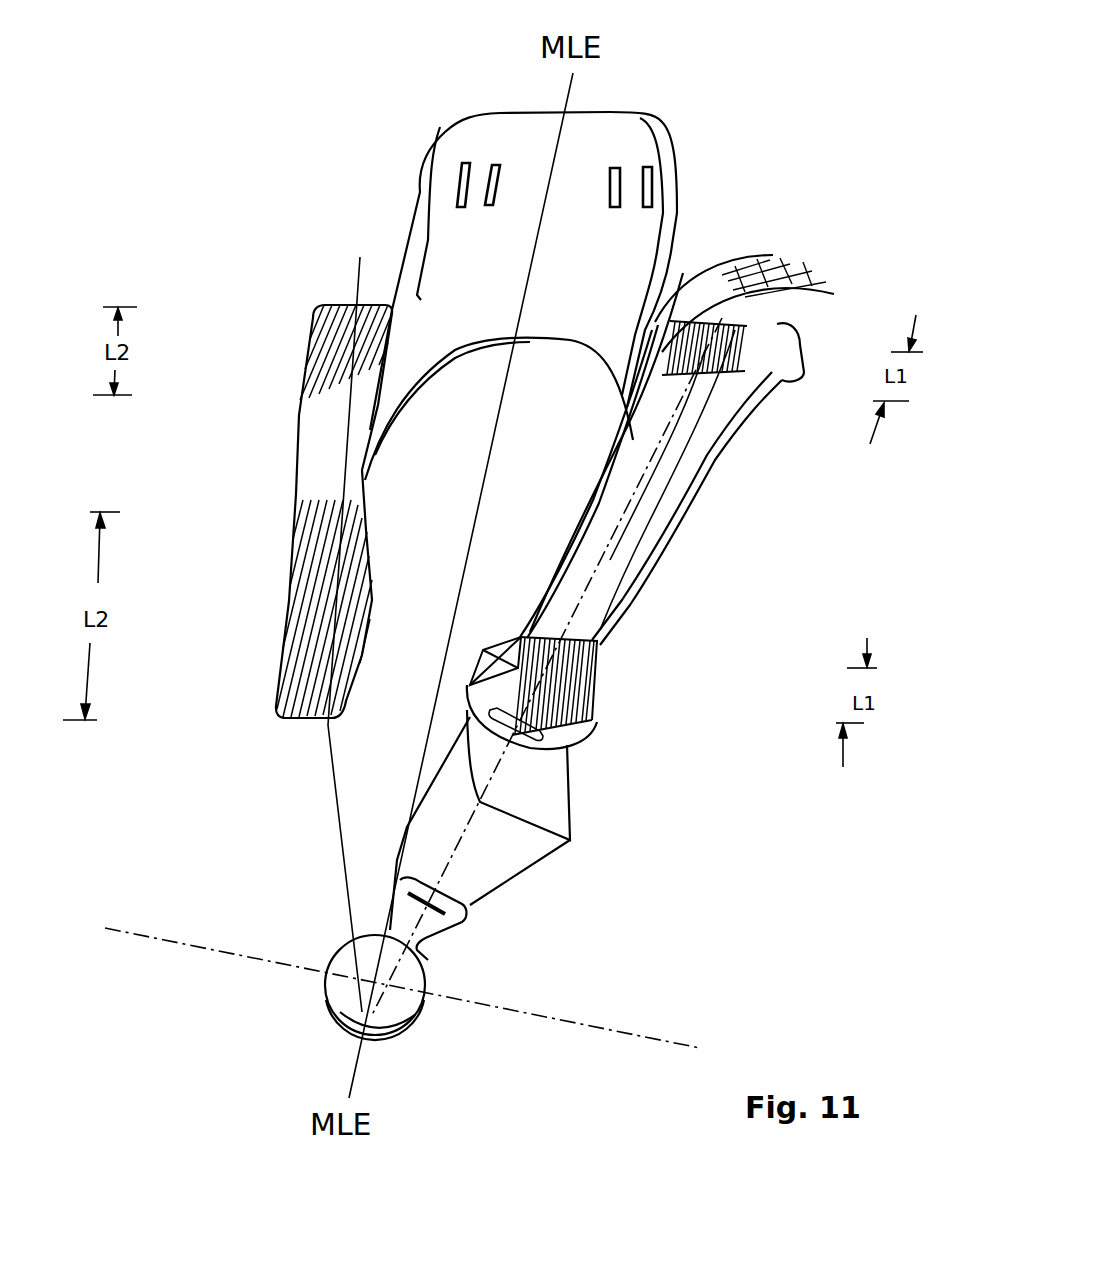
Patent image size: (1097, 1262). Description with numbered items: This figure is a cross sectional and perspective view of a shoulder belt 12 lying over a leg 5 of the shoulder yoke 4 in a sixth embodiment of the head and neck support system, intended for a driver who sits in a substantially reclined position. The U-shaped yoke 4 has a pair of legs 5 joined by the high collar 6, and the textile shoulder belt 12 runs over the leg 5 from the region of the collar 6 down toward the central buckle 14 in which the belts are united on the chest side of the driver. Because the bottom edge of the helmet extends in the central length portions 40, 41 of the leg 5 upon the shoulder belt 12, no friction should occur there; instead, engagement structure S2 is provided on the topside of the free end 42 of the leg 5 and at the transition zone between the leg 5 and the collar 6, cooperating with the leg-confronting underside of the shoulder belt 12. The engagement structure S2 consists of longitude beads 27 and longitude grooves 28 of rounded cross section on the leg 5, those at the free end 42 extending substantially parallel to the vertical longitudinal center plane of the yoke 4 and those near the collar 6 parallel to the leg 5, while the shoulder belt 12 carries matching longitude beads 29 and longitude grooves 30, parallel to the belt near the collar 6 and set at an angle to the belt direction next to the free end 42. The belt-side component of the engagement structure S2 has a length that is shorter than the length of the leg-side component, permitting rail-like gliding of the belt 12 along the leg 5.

The shoulder yoke 4 is at (400, 192).
The collar 6 is at (640, 142).
The longitude beads 27 is at (330, 335).
The engagement structure S2 is at (322, 338).
The longitude grooves 28 is at (330, 357).
The central length portion 40 is at (320, 445).
The legs 5 is at (282, 504).
The free ends 42 is at (280, 708).
The longitude beads 29 is at (670, 318).
The longitude grooves 30 is at (760, 326).
The central length portion 41 is at (662, 474).
The shoulder belts 12 is at (680, 535).
The central buckle 14 is at (350, 988).